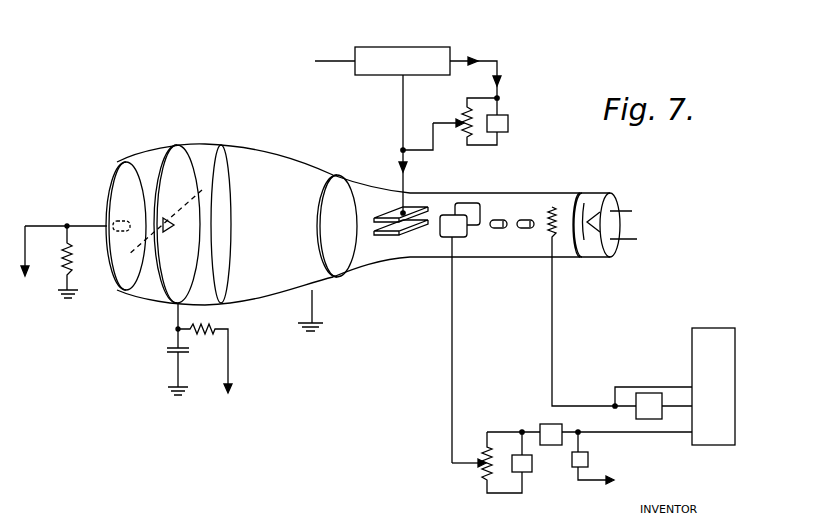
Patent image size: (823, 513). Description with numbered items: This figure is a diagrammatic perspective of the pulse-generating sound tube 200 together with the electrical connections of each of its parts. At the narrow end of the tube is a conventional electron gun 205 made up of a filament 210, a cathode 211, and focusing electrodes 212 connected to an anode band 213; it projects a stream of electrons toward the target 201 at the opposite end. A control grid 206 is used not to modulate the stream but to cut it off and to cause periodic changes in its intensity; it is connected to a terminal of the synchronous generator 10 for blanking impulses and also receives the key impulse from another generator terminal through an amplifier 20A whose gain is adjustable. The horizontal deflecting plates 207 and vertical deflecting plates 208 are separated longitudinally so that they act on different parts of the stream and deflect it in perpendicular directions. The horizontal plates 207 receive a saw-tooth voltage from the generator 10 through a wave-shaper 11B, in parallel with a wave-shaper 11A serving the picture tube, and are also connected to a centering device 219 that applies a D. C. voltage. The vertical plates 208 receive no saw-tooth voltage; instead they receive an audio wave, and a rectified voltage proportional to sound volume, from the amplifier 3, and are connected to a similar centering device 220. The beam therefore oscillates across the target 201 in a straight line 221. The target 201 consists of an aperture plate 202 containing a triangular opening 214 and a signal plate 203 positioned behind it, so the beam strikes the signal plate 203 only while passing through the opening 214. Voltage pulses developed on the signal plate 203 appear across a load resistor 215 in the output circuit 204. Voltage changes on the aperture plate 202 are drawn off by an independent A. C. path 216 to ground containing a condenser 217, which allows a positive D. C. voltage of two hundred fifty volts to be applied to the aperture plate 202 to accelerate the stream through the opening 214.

The amplifier 3 is at (435, 45).
The synchronous generator 10 is at (736, 390).
The wave-shaper 11A is at (588, 457).
The wave-shaper 11B is at (541, 424).
The amplifier 20A is at (637, 417).
The sound tube 200 is at (270, 303).
The target 201 is at (173, 145).
The aperture plate 202 is at (167, 300).
The signal plate 203 is at (125, 282).
The output circuit 204 is at (85, 224).
The electron gun 205 is at (602, 177).
The control grid 206 is at (548, 238).
The horizontal deflecting plates 207 is at (477, 184).
The vertical deflecting plates 208 is at (413, 230).
The filament 210 is at (637, 239).
The cathode 211 is at (581, 242).
The focusing electrodes 212 is at (495, 228).
The anode band 213 is at (310, 172).
The triangular opening 214 is at (173, 233).
The load resistor 215 is at (42, 266).
The A. C. path 216 is at (178, 381).
The condenser 217 is at (170, 355).
The centering device 219 is at (492, 472).
The centering device 220 is at (471, 119).
The straight line 221 is at (206, 186).